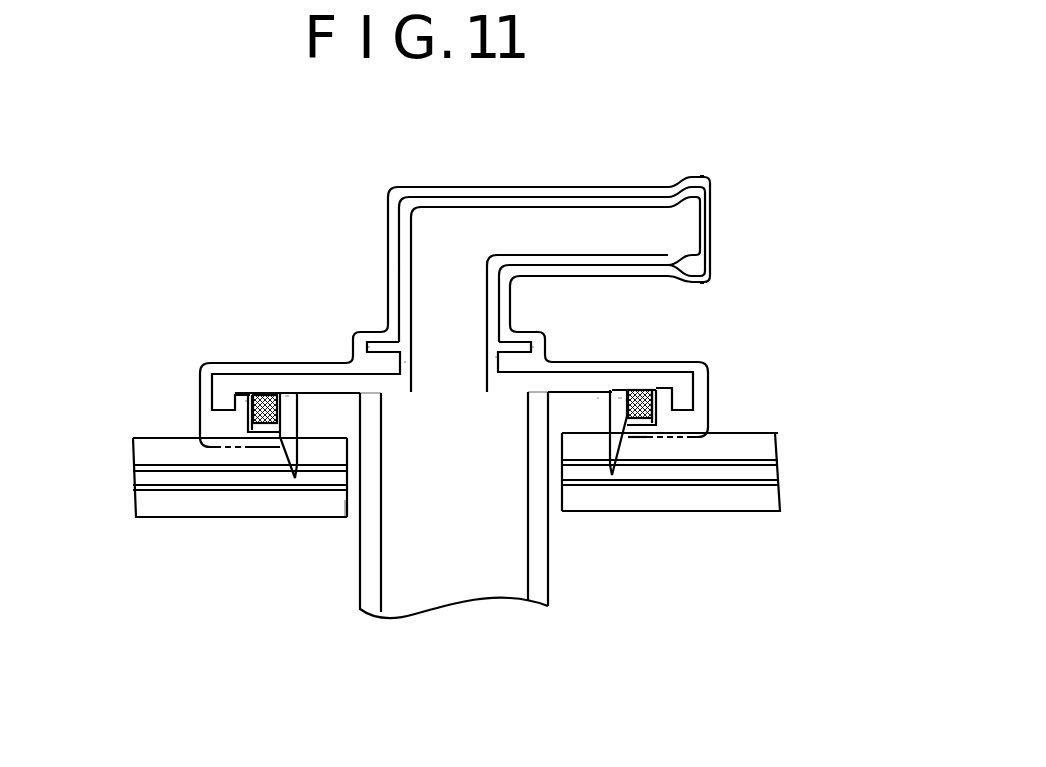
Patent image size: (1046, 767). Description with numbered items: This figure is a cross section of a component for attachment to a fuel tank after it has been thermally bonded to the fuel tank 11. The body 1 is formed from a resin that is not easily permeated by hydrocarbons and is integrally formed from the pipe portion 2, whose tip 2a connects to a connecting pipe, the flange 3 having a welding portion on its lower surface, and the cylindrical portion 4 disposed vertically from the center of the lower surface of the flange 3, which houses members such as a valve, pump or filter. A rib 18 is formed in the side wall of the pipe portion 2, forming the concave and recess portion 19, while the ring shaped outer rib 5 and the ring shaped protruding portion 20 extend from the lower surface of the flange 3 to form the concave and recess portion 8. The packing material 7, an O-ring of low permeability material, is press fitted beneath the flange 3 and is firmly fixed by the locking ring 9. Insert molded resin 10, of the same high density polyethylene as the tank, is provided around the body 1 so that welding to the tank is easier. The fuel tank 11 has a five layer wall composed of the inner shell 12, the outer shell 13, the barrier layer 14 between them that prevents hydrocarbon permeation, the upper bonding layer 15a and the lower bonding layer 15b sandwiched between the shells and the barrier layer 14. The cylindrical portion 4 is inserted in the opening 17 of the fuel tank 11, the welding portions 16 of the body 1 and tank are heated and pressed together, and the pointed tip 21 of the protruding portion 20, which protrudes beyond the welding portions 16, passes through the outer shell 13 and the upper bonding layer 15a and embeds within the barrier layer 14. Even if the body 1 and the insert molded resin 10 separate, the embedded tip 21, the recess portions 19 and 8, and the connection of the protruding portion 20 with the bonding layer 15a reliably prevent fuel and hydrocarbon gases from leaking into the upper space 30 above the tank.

The body 1 is at (358, 161).
The pipe portion 2 is at (512, 200).
The tip 2a is at (712, 195).
The flange 3 is at (247, 385).
The cylindrical portion 4 is at (368, 578).
The outer rib 5 is at (217, 388).
The packing material 7 is at (272, 393).
The concave and recess portion 8 is at (247, 403).
The locking ring 9 is at (250, 433).
The insert molded resin 10 is at (390, 232).
The fuel tank 11 is at (750, 512).
The inner shell 12 is at (155, 513).
The outer shell 13 is at (135, 440).
The barrier layer 14 is at (140, 478).
The upper bonding layer 15a is at (135, 467).
The lower bonding layer 15b is at (140, 491).
The welding portion 16 is at (268, 440).
The opening 17 is at (348, 513).
The rib 18 is at (380, 348).
The concave and recess portion 19 is at (408, 362).
The protruding portion 20 is at (287, 393).
The tip 21 is at (345, 452).
The upper space 30 is at (360, 412).